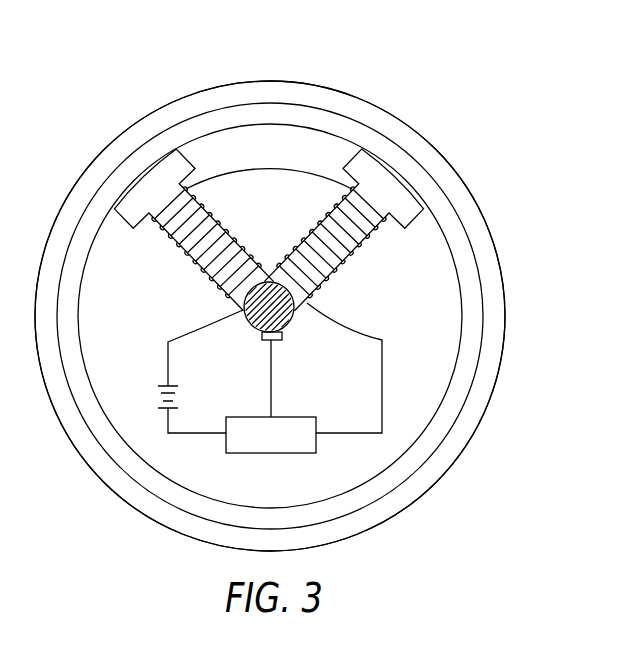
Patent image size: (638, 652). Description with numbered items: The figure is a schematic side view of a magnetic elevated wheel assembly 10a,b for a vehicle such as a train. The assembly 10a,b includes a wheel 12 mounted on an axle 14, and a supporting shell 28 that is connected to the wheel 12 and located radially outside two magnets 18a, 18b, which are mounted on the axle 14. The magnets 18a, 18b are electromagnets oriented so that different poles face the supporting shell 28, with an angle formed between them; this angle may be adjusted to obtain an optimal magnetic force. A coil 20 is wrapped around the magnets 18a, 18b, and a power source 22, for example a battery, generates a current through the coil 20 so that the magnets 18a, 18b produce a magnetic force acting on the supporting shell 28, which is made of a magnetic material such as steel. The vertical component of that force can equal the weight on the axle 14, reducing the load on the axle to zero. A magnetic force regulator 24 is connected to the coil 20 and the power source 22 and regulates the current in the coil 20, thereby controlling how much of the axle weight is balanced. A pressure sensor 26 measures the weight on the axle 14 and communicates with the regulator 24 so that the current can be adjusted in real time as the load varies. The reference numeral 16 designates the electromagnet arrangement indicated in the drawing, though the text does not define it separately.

The magnetic elevated wheel assembly 10a,b is at (396, 60).
The wheel 12 is at (207, 102).
The supporting shell 28 is at (273, 110).
The electromagnet 16 is at (262, 213).
The magnet 18a is at (172, 167).
The magnet 18b is at (360, 209).
The coil 20 is at (370, 167).
The axle 14 is at (285, 326).
The pressure sensor 26 is at (261, 340).
The power source 22 is at (166, 412).
The magnetic force regulator 24 is at (277, 455).